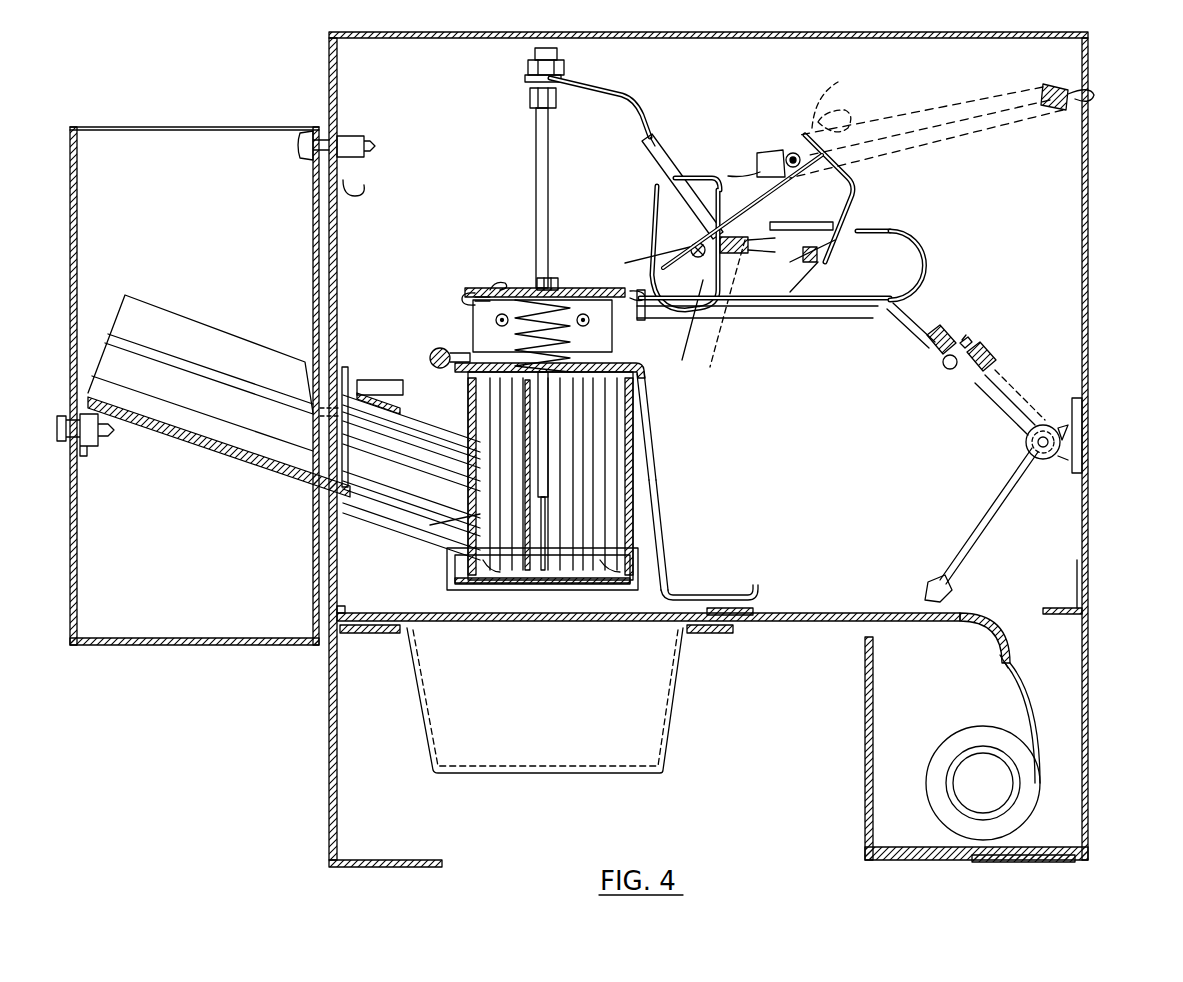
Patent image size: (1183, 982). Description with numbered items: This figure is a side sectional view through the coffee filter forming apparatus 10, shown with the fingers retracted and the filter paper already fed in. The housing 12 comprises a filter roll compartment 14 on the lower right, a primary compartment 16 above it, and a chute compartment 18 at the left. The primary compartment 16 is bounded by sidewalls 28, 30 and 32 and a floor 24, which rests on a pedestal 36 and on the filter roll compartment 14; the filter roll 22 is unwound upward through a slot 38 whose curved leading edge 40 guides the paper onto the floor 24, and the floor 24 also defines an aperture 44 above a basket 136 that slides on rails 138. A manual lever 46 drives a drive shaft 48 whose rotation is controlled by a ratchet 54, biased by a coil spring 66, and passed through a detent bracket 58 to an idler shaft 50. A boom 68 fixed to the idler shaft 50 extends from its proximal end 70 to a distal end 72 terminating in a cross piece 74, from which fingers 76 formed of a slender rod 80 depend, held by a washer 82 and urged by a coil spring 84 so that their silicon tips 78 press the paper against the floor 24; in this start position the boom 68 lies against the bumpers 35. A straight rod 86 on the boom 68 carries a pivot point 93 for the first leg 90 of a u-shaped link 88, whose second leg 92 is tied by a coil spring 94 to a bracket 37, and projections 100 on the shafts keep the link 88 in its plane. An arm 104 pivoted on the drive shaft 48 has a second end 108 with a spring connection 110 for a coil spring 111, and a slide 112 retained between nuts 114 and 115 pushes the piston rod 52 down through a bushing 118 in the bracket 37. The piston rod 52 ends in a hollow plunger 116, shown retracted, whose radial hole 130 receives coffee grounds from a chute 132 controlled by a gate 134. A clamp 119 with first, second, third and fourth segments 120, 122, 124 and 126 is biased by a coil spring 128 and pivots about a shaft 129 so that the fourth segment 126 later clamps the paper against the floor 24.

The apparatus 10 is at (1092, 251).
The housing 12 is at (1088, 196).
The filter roll compartment 14 is at (1088, 672).
The primary compartment 16 is at (1088, 574).
The chute compartment 18 is at (195, 645).
The filter roll 22 is at (1043, 775).
The floor 24 is at (358, 612).
The sidewall 28 is at (1088, 160).
The sidewall 30 is at (394, 62).
The sidewall 32 is at (329, 56).
The bumpers 35 is at (1078, 441).
The pedestal 36 is at (332, 798).
The bracket 37 is at (473, 320).
The slot 38 is at (1025, 612).
The leading edge 40 is at (1000, 660).
The aperture 44 is at (455, 621).
The manual lever 46 is at (818, 92).
The drive shaft 48 is at (680, 243).
The idler shaft 50 is at (810, 258).
The piston rod 52 is at (536, 166).
The ratchet 54 is at (727, 307).
The detent bracket 58 is at (685, 324).
The coil spring 66 is at (940, 150).
The boom 68 is at (918, 314).
The proximal end 70 is at (848, 216).
The distal end 72 is at (1012, 423).
The cross piece 74 is at (1026, 443).
The fingers 76 is at (992, 505).
The distal tip 78 is at (927, 590).
The slender rod 80 is at (1068, 430).
The washer 82 is at (1060, 452).
The coil spring 84 is at (992, 360).
The straight rod 86 is at (752, 252).
The u-shaped link 88 is at (918, 240).
The first leg 90 is at (878, 230).
The second leg 92 is at (772, 318).
The pivot point 93 is at (780, 200).
The coil spring 94 is at (572, 288).
The projections 100 is at (655, 202).
The arm 104 is at (680, 160).
The second end 108 is at (660, 140).
The spring connection 110 is at (735, 172).
The coil spring 111 is at (935, 115).
The slide 112 is at (596, 86).
The nut 114 is at (556, 100).
The nut 115 is at (528, 64).
The plunger 116 is at (633, 482).
The bushing 118 is at (535, 282).
The clamp 119 is at (664, 528).
The first segment 120 is at (618, 363).
The second segment 122 is at (656, 437).
The third segment 124 is at (700, 592).
The fourth segment 126 is at (758, 594).
The coil spring 128 is at (462, 297).
The shaft 129 is at (430, 355).
The radially oriented hole 130 is at (430, 525).
The chute 132 is at (452, 474).
The gate 134 is at (348, 367).
The basket 136 is at (665, 726).
The rails 138 is at (370, 633).